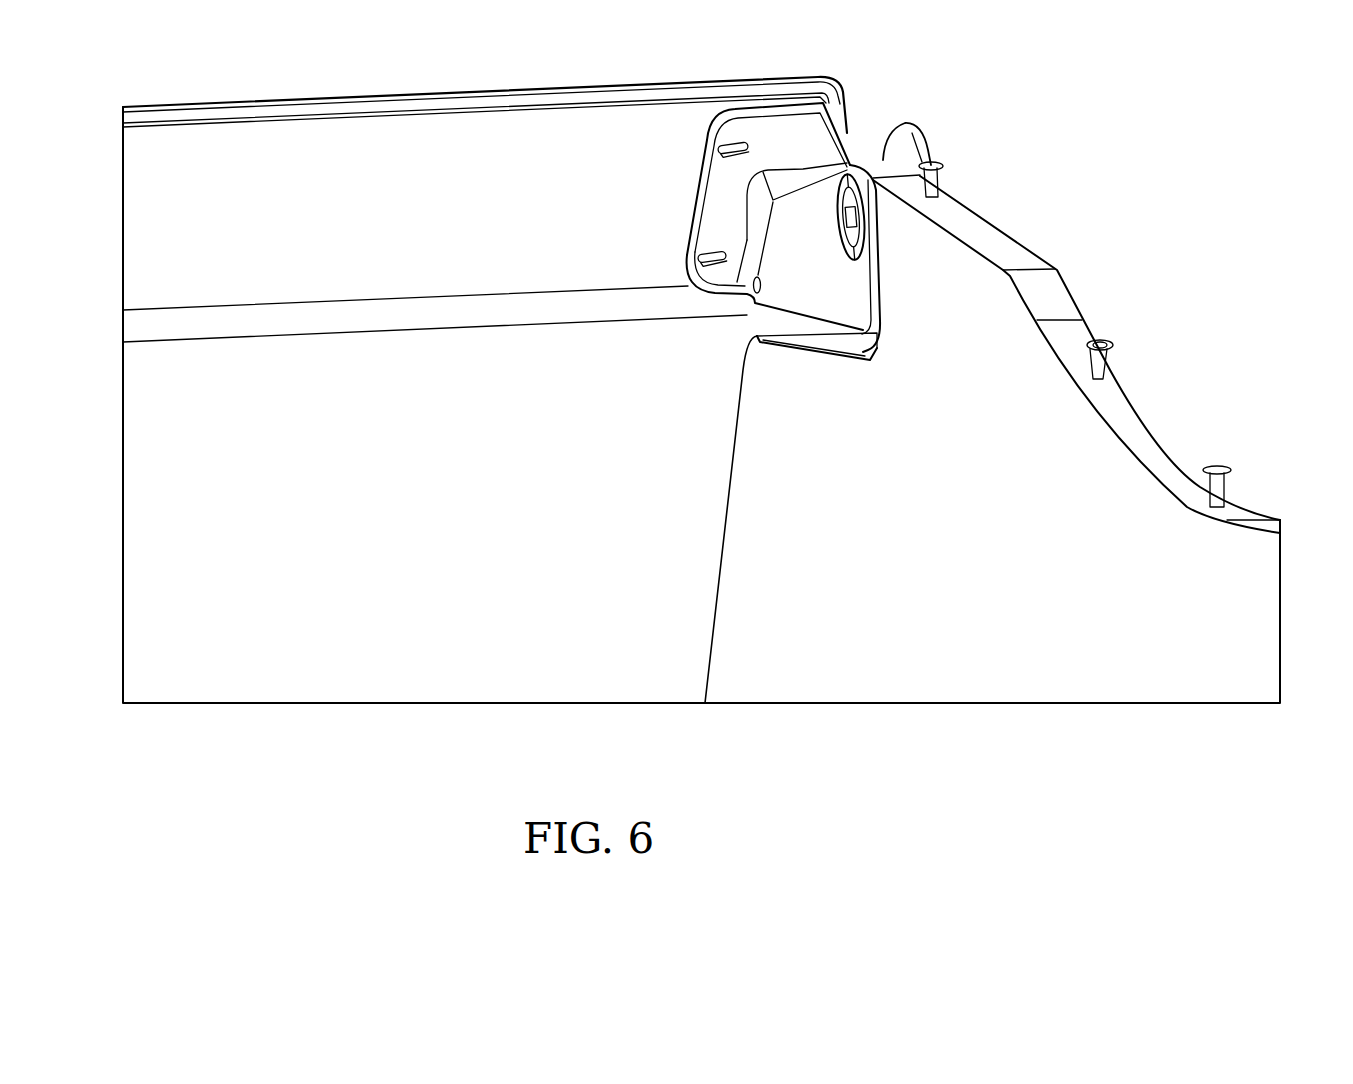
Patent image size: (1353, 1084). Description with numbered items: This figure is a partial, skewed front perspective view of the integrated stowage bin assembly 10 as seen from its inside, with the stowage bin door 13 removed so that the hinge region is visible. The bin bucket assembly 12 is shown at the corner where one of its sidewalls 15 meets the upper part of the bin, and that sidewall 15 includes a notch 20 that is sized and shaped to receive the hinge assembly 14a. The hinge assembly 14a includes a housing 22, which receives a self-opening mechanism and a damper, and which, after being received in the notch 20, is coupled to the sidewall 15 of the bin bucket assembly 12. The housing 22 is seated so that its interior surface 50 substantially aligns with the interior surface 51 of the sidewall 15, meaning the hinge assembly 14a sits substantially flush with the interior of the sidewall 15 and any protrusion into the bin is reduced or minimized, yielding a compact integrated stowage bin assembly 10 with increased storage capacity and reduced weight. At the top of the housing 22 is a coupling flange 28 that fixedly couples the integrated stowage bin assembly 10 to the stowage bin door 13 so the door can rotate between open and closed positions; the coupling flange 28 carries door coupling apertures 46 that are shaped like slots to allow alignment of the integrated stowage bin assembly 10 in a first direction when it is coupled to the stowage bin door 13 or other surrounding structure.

The integrated stowage bin assembly 10 is at (1066, 118).
The bin bucket assembly 12 is at (272, 155).
The stowage bin door 13 is at (370, 125).
The hinge assembly 14a is at (867, 141).
The sidewall 15 is at (1058, 300).
The notch 20 is at (790, 346).
The housing 22 is at (777, 290).
The coupling flange 28 is at (770, 143).
The door coupling apertures 46 is at (700, 236).
The interior surface 50 is at (824, 284).
The interior surface 51 is at (948, 502).